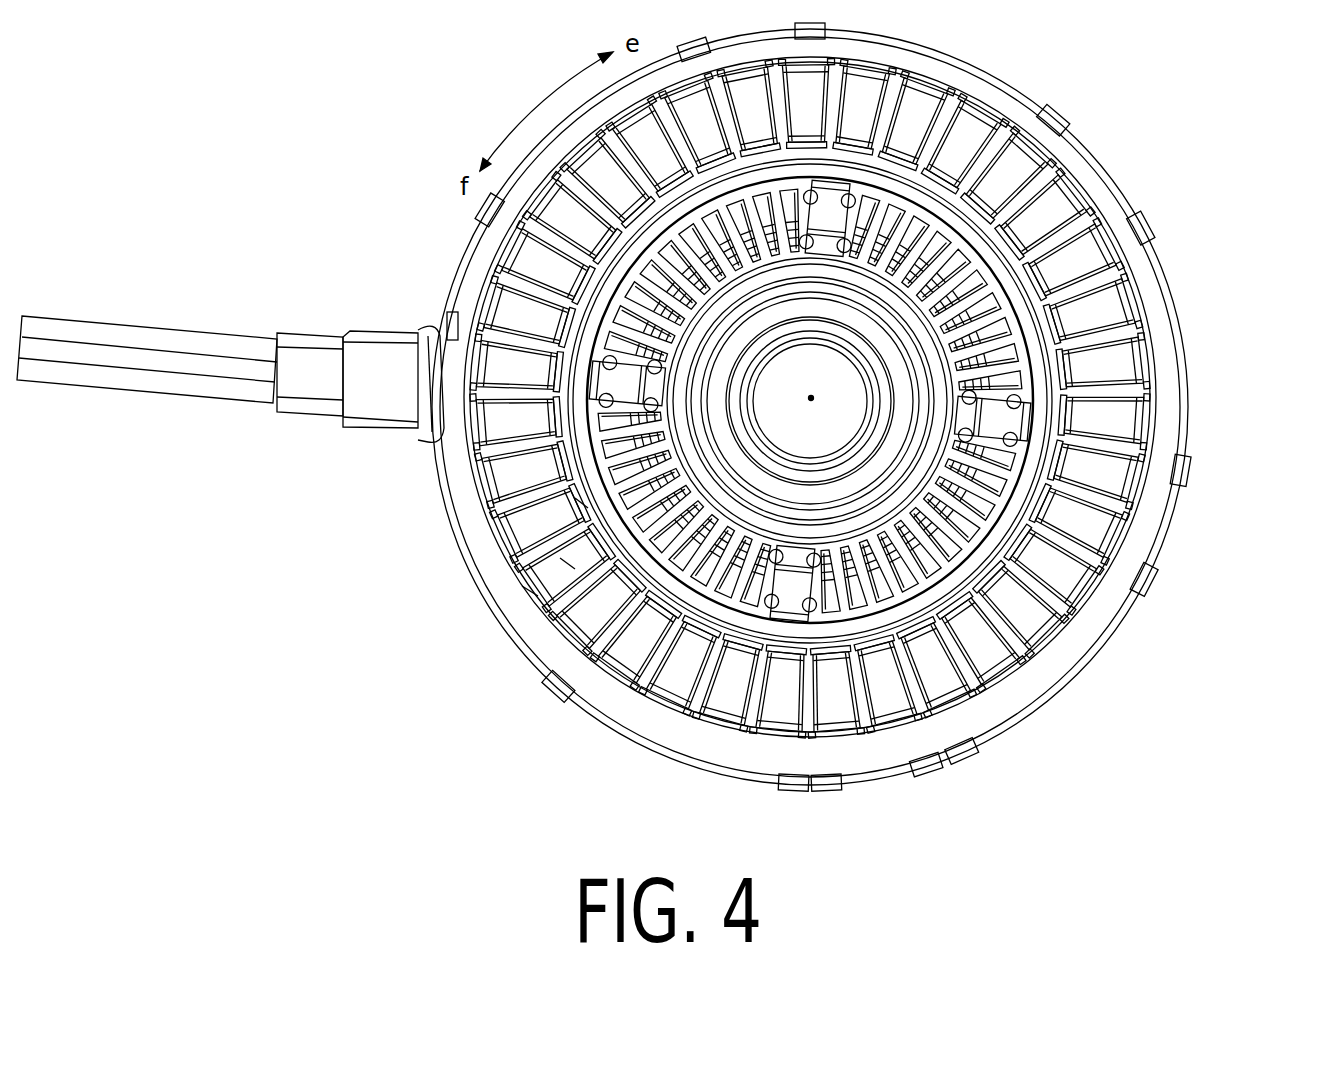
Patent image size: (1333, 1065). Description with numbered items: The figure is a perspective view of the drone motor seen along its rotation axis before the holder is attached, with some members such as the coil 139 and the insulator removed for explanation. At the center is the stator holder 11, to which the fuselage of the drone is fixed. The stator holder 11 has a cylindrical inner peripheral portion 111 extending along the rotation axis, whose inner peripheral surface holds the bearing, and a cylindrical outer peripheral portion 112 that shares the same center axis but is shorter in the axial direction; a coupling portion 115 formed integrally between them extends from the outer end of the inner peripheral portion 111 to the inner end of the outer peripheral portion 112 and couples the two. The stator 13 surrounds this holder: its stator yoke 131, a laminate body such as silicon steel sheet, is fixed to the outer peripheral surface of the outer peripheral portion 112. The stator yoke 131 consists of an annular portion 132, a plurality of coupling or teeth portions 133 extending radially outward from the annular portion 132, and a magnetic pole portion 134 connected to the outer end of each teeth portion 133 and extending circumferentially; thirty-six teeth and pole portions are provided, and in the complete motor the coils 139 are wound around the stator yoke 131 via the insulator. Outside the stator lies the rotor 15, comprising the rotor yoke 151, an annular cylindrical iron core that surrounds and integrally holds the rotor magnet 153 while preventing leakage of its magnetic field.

The stator holder 11 is at (1288, 295).
The inner peripheral portion 111 is at (917, 370).
The outer peripheral portion 112 is at (1050, 420).
The coupling portion 115 is at (998, 397).
The stator 13 is at (337, 748).
The stator yoke 131 is at (357, 550).
The annular portion 132 is at (580, 503).
The coupling portion (teeth portion) 133 is at (567, 563).
The magnetic pole portion 134 is at (530, 590).
The coil 139 is at (990, 658).
The rotor 15 is at (505, 713).
The rotor yoke 151 is at (637, 733).
The rotor magnet 153 is at (625, 702).